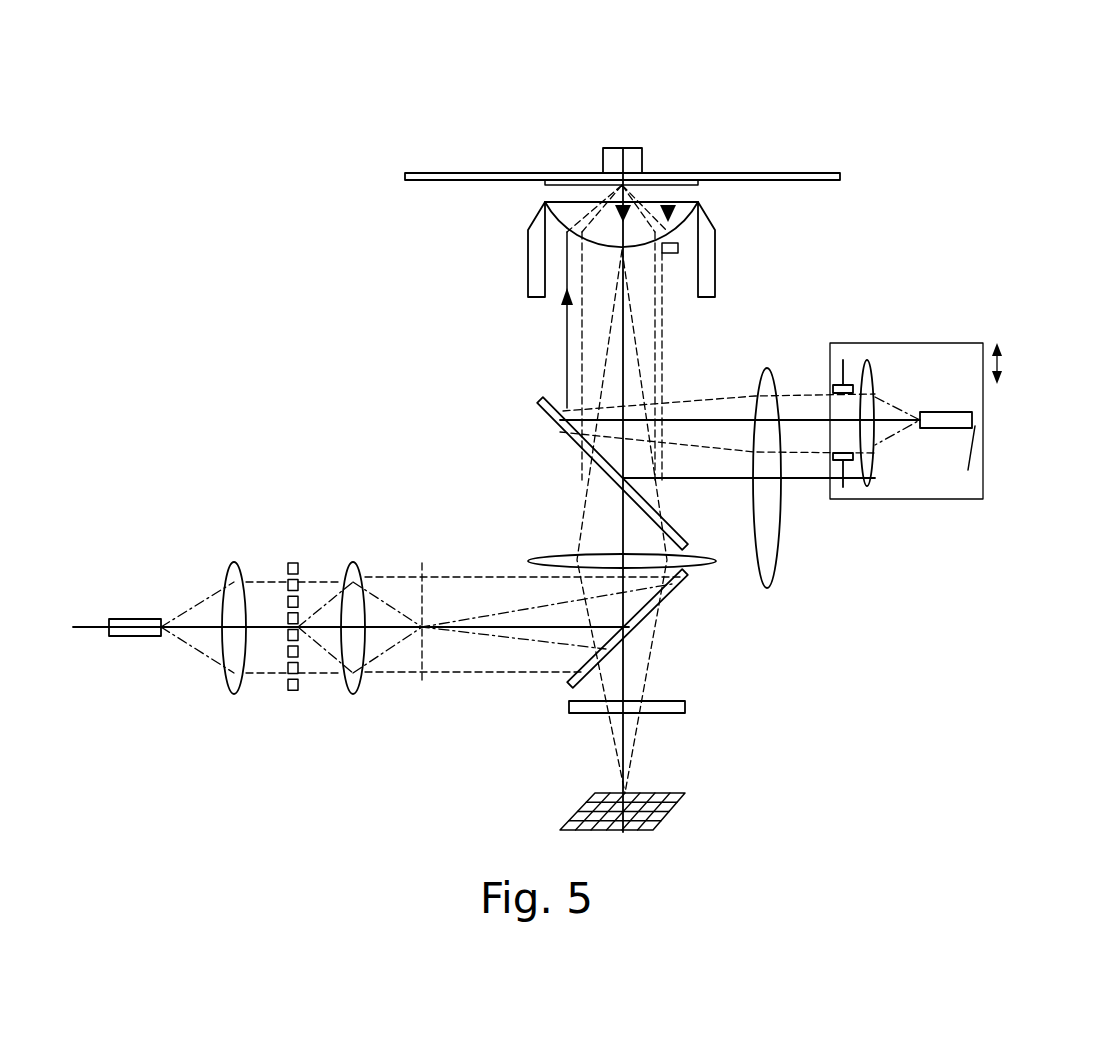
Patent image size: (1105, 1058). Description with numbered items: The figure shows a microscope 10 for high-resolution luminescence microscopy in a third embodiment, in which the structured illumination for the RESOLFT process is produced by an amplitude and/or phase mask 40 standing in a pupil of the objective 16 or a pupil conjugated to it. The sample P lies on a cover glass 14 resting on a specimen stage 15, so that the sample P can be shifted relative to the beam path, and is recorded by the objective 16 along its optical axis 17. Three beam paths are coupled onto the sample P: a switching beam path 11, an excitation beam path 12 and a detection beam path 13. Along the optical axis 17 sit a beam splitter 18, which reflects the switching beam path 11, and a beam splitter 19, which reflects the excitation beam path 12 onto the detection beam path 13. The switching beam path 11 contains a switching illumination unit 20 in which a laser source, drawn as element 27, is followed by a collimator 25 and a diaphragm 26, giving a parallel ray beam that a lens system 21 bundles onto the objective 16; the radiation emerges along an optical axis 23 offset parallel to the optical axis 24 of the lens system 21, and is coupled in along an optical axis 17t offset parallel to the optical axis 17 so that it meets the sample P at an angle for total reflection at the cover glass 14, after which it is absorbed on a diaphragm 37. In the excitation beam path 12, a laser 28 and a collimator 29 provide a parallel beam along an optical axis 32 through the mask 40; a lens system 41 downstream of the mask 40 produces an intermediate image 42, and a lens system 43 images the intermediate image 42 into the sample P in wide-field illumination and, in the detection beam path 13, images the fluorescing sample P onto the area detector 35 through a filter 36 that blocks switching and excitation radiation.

The microscope 10 is at (288, 355).
The switching beam path 11 is at (828, 224).
The excitation beam path 12 is at (402, 761).
The detection beam path 13 is at (829, 718).
The cover glass 14 is at (755, 173).
The specimen stage 15 is at (622, 148).
The sample P is at (660, 175).
The objective 16 is at (548, 205).
The optical axis 17 is at (612, 505).
The optical axis 17t is at (565, 300).
The beam splitter 18 is at (545, 405).
The beam splitter 19 is at (568, 690).
The switching illumination unit 20 is at (935, 343).
The lens system 21 is at (775, 565).
The optical axis 23 is at (1005, 362).
The optical axis 24 is at (697, 480).
The collimator 25 is at (868, 363).
The diaphragm 26 is at (840, 373).
The focus detector 27 is at (945, 410).
The laser 28 is at (136, 619).
The collimator 29 is at (220, 680).
The optical axis 32 is at (505, 628).
The area detector 35 is at (680, 805).
The filter 36 is at (685, 707).
The diaphragm 37 is at (672, 255).
The amplitude and/or phase mask 40 is at (290, 560).
The lens system 41 is at (340, 690).
The intermediate image 42 is at (420, 565).
The lens system 43 is at (562, 555).